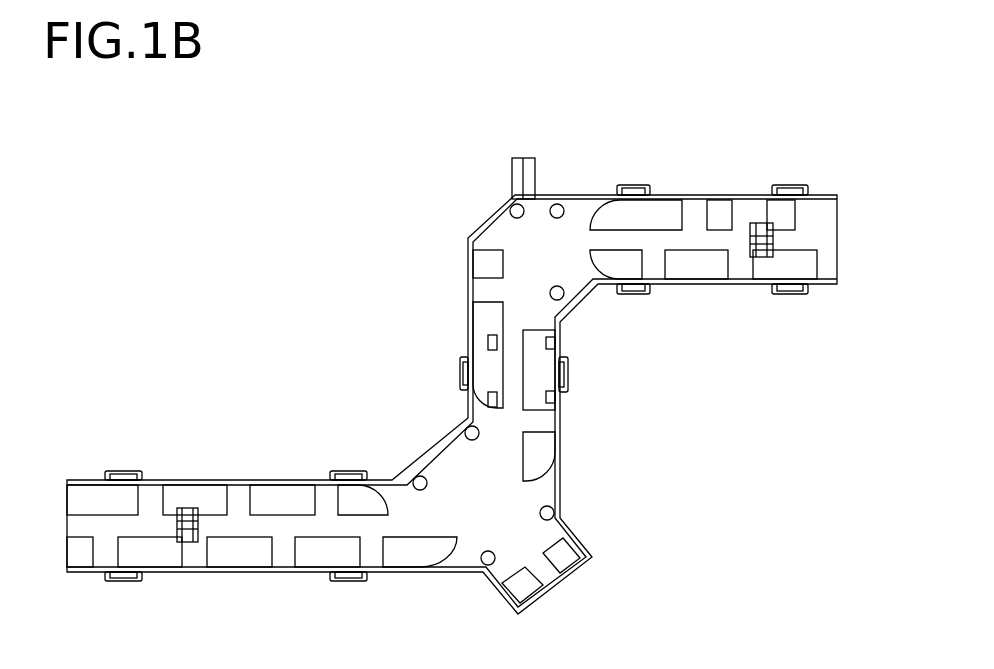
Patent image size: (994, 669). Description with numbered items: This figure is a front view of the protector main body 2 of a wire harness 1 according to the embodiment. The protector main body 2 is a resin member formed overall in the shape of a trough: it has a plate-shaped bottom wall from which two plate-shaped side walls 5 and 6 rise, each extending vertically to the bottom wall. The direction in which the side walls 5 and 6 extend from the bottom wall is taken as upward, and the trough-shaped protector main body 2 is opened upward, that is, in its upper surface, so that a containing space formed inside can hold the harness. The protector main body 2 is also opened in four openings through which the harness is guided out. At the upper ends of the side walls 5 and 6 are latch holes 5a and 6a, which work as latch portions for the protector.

The electronic device / assembly 1 is at (733, 96).
The protector main body 2 is at (205, 572).
The side wall 5 is at (560, 478).
The latch hole 5a is at (124, 581).
The side wall 6 is at (487, 220).
The latch hole 6a is at (122, 470).